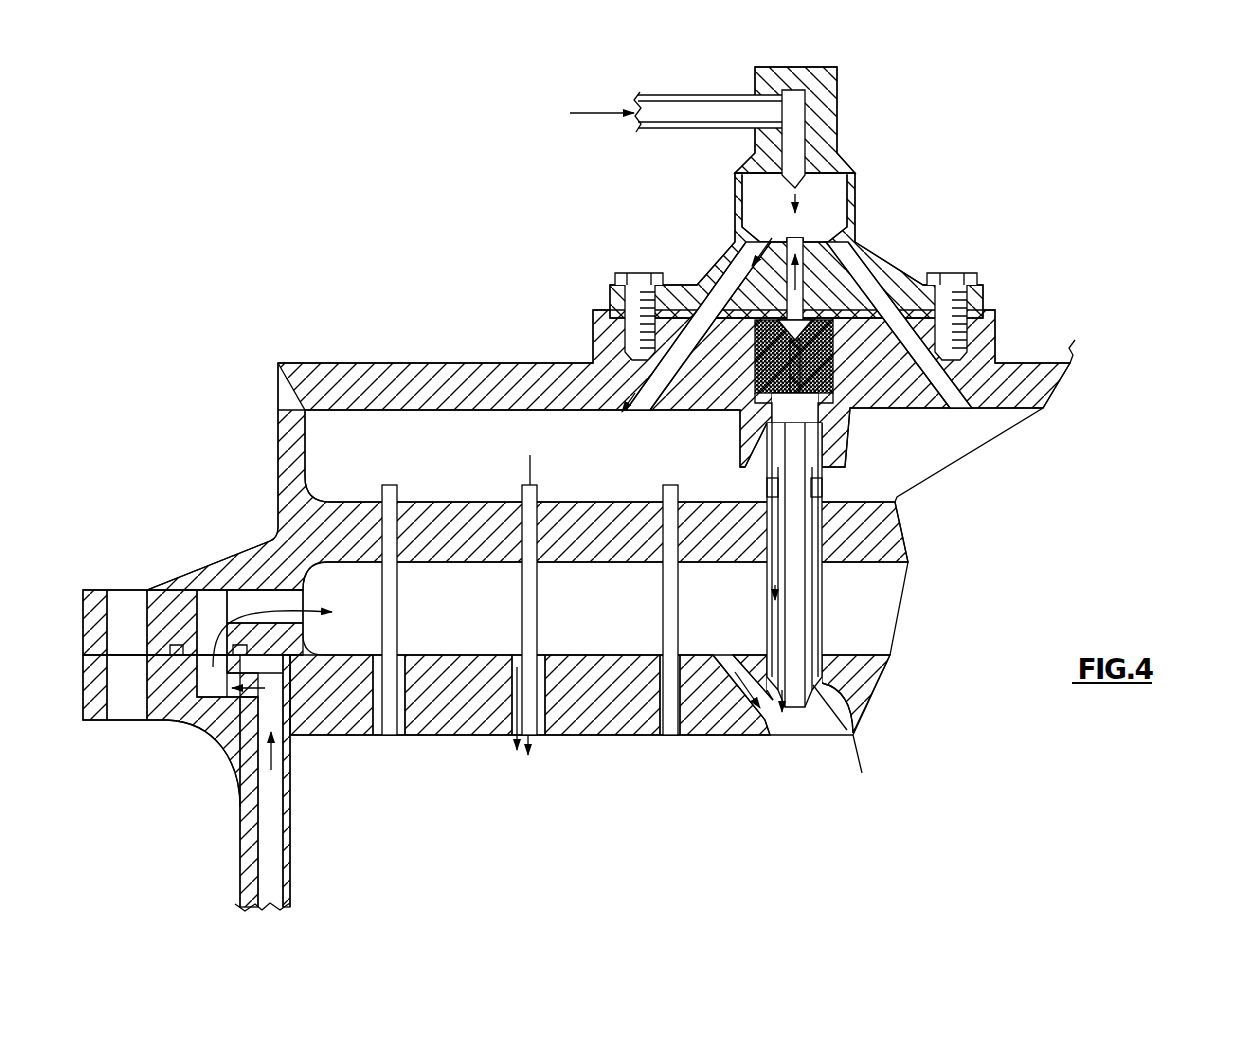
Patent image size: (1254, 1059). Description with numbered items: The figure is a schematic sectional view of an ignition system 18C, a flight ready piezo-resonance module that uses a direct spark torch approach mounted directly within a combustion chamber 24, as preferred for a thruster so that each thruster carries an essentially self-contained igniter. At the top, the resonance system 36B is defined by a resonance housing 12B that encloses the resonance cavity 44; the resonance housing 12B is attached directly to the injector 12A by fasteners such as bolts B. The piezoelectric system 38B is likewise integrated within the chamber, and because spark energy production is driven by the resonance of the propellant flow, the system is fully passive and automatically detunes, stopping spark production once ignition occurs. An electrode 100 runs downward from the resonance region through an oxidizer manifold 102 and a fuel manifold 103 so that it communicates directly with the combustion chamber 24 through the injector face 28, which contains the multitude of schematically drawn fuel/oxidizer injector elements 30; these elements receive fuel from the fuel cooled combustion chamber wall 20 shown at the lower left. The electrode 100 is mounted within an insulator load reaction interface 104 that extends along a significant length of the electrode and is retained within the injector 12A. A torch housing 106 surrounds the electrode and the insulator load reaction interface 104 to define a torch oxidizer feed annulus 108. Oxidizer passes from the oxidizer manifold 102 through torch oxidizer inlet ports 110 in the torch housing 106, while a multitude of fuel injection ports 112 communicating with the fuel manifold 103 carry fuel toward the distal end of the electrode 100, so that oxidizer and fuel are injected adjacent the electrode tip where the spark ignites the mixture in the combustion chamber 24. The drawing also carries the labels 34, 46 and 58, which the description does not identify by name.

The injector 12A is at (387, 372).
The resonance housing 12B is at (737, 205).
The ignition system 18C is at (1144, 153).
The fuel cooled combustion chamber wall 20 is at (240, 808).
The combustion chamber 24 is at (720, 855).
The injector face 28 is at (618, 745).
The fuel/oxidizer injector elements 30 is at (518, 615).
The fluid supply line 34 is at (690, 95).
The resonance system 36B is at (864, 93).
The piezoelectric system 38B is at (745, 385).
The resonance cavity 44 is at (757, 227).
The inlet passage 46 is at (799, 178).
The passage 58 is at (867, 262).
The bolts B is at (618, 275).
The electrode 100 is at (796, 708).
The oxidizer manifold 102 is at (440, 470).
The fuel manifold 103 is at (700, 611).
The insulator load reaction interface 104 is at (810, 635).
The torch housing 106 is at (823, 590).
The torch oxidizer feed annulus 108 is at (815, 686).
The torch oxidizer inlet ports 110 is at (767, 488).
The fuel injection ports 112 is at (400, 737).